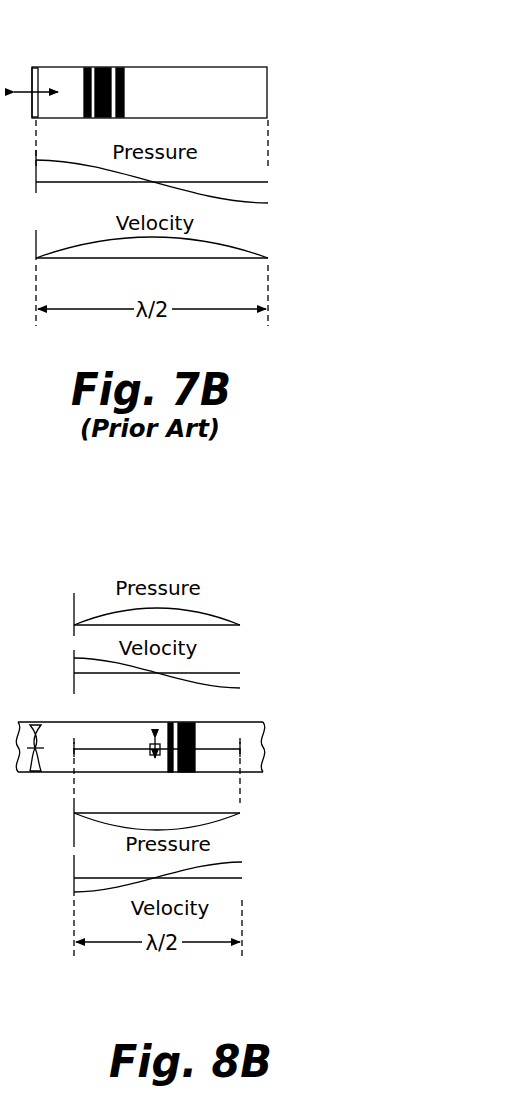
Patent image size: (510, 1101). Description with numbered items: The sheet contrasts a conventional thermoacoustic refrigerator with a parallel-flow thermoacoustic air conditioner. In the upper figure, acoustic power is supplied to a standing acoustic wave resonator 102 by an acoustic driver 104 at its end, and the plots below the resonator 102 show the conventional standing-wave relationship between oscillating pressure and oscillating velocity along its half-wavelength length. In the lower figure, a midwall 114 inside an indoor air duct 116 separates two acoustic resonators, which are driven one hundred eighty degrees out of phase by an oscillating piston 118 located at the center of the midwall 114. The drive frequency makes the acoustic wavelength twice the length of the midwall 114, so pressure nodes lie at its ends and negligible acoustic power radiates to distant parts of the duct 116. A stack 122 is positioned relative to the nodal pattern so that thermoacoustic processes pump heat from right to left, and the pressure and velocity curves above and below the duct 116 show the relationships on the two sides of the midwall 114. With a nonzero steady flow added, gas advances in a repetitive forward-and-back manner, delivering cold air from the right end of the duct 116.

In FIG. 7B, the resonator 102 is at (205, 75).
In FIG. 7B, the acoustic driver 104 is at (33, 66).
In FIG. 8B, the midwall 114 is at (216, 749).
In FIG. 8B, the indoor air duct 116 is at (228, 738).
In FIG. 8B, the oscillating piston 118 is at (148, 752).
In FIG. 8B, the stack 122 is at (184, 722).